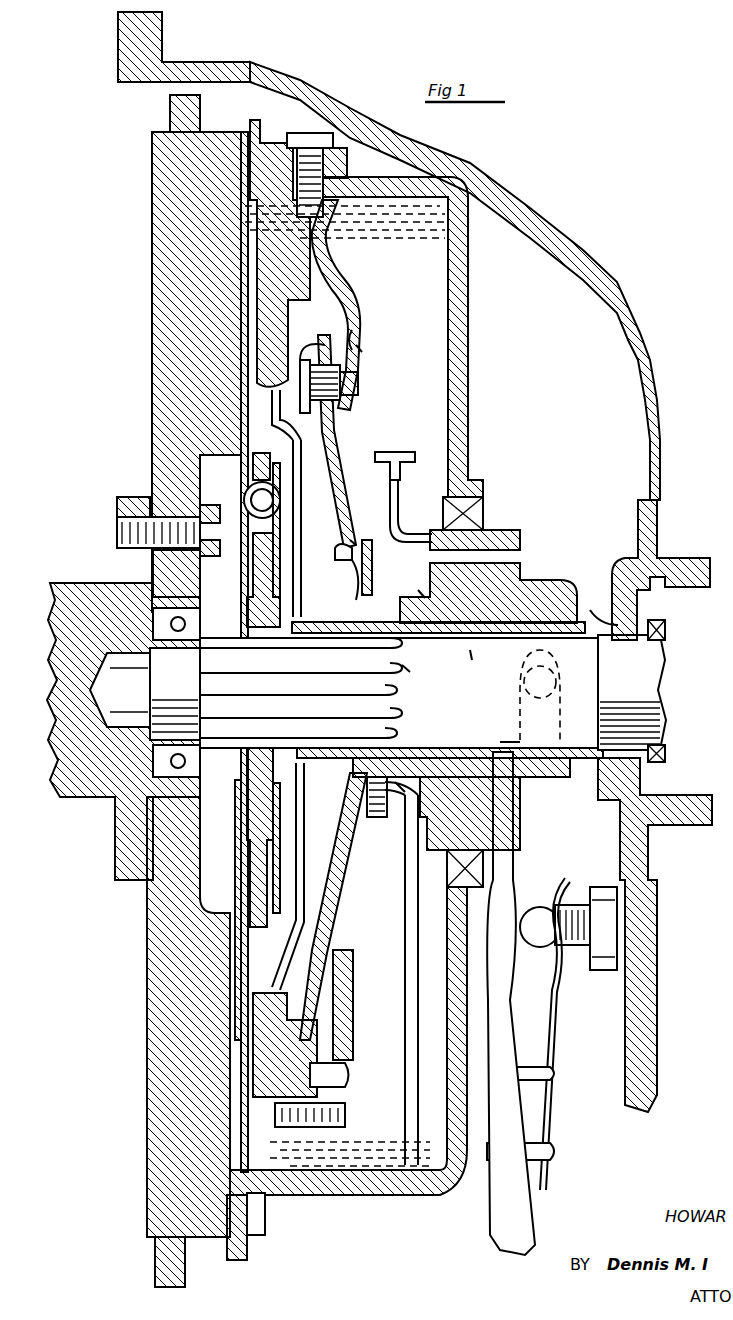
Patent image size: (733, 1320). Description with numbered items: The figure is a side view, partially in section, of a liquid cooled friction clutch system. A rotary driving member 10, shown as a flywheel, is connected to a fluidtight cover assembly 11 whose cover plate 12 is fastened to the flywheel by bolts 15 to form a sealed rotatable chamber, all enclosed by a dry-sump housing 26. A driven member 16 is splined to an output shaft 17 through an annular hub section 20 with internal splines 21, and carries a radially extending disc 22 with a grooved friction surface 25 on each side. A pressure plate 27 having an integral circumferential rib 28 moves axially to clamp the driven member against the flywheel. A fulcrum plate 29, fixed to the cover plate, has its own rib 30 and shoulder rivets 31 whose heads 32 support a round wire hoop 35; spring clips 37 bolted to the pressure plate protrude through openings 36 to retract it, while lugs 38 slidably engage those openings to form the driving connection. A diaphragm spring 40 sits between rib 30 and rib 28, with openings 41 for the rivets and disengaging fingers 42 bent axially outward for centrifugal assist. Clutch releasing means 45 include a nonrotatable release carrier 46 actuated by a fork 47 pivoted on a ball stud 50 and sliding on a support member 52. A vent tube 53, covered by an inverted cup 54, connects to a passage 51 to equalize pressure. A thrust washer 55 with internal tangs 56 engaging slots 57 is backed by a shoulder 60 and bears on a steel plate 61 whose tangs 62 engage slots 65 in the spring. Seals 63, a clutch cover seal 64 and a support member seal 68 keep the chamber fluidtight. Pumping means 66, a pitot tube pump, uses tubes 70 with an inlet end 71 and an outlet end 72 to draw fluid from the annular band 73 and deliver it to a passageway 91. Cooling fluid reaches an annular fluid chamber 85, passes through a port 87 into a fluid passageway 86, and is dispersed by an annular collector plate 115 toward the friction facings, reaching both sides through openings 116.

The rotary driving member 10 is at (152, 238).
The cover assembly 11 is at (290, 125).
The cover plate 12 is at (470, 300).
The bolts 15 is at (266, 1230).
The driven member 16 is at (238, 818).
The output shaft 17 is at (658, 663).
The annular hub section 20 is at (222, 604).
The internal splines 21 is at (248, 676).
The radially outwardly extending disc 22 is at (244, 440).
The grooved friction surfaces 25 is at (242, 240).
The housing 26 is at (470, 172).
The pressure plate 27 is at (262, 275).
The integral circumferential rib 28 is at (345, 285).
The fulcrum plate 29 is at (360, 350).
The integral circumferential rib 30 is at (355, 332).
The shoulder rivets 31 is at (358, 385).
The heads 32 is at (304, 400).
The round wire hoop 35 is at (310, 348).
The openings 36 is at (350, 1045).
The spring clips 37 is at (352, 1070).
The lugs 38 is at (330, 1130).
The diaphragm spring 40 is at (330, 918).
The openings 41 is at (326, 428).
The disengaging fingers 42 is at (348, 782).
The clutch releasing means 45 is at (416, 588).
The release carrier 46 is at (546, 580).
The fork 47 is at (500, 1010).
The ball stud 50 is at (530, 905).
The passage 51 is at (500, 532).
The support member 52 is at (314, 622).
The vent tube 53 is at (386, 493).
The inverted cup 54 is at (396, 452).
The thrust washer 55 is at (380, 820).
The internal tangs 56 is at (405, 665).
The slots 57 is at (352, 598).
The shoulder 60 is at (398, 784).
The steel plate 61 is at (374, 556).
The tangs 62 is at (335, 553).
The seals 63 is at (598, 616).
The clutch cover seal 64 is at (483, 500).
The slots 65 is at (352, 538).
The pumping means 66 is at (400, 896).
The support member seal 68 is at (640, 750).
The tubes 70 is at (402, 986).
The inlet end 71 is at (395, 1195).
The outlet end 72 is at (438, 855).
The annular band 73 is at (378, 1140).
The annular fluid chamber 85 is at (470, 660).
The fluid passageway 86 is at (490, 742).
The port 87 is at (520, 705).
The passageway 91 is at (495, 810).
The annular collector plate 115 is at (302, 520).
The openings 116 is at (244, 376).